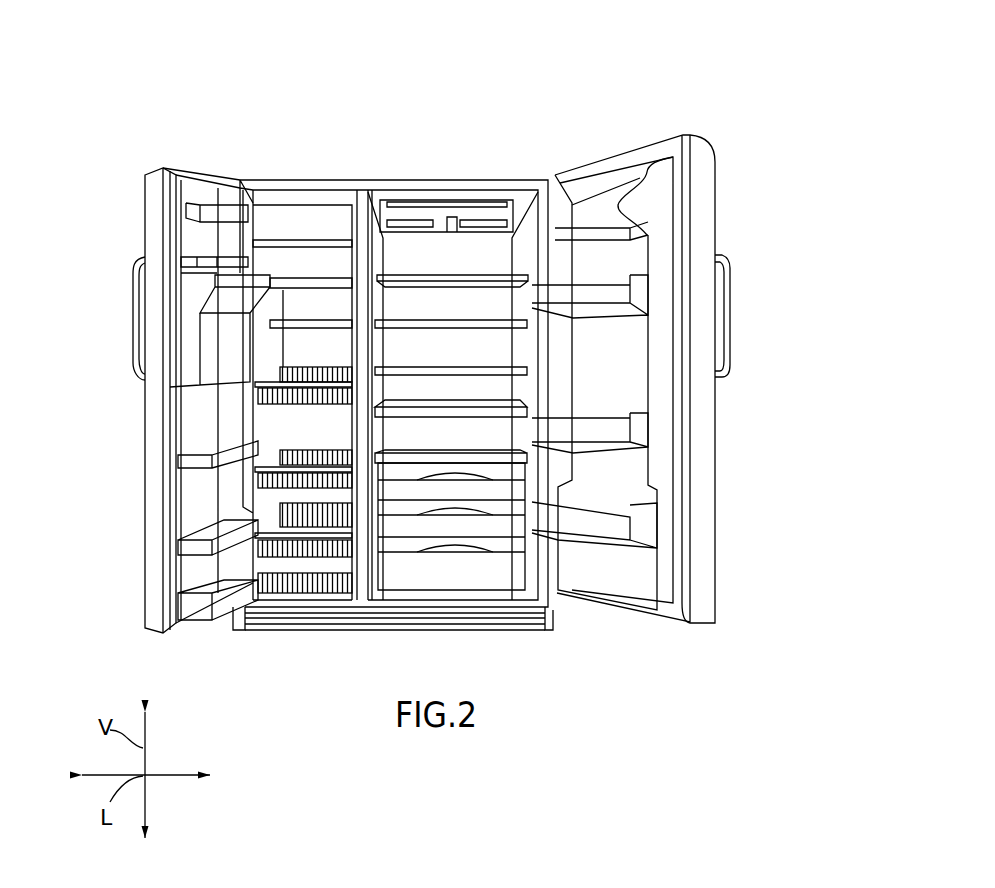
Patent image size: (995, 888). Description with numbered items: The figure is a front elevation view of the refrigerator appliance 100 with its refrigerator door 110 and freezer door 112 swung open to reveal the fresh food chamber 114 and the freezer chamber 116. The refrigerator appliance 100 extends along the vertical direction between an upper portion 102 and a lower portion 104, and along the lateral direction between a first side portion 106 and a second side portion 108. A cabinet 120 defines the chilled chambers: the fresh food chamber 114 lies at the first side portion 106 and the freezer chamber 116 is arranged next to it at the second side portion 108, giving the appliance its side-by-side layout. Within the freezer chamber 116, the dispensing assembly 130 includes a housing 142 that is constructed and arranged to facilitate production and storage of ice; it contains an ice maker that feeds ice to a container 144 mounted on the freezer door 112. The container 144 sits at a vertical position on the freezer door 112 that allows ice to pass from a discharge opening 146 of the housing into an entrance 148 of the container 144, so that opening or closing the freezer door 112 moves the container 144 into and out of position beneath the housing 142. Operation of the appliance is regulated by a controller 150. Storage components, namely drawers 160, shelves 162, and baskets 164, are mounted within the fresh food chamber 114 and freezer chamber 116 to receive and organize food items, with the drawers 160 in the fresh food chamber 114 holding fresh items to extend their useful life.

The refrigerator appliance 100 is at (620, 96).
The upper portion 102 is at (134, 172).
The lower portion 104 is at (134, 621).
The first side portion 106 is at (243, 163).
The second side portion 108 is at (550, 163).
The refrigerator door 110 is at (697, 226).
The freezer door 112 is at (152, 213).
The fresh food chamber 114 is at (484, 386).
The freezer chamber 116 is at (303, 421).
The cabinet 120 is at (546, 611).
The dispensing assembly 130 is at (278, 252).
The housing 142 is at (312, 265).
The container 144 is at (223, 330).
The discharge opening 146 is at (301, 288).
The entrance 148 is at (214, 254).
The controller 150 is at (475, 208).
The drawers 160 is at (492, 525).
The shelves 162 is at (227, 537).
The baskets 164 is at (295, 583).